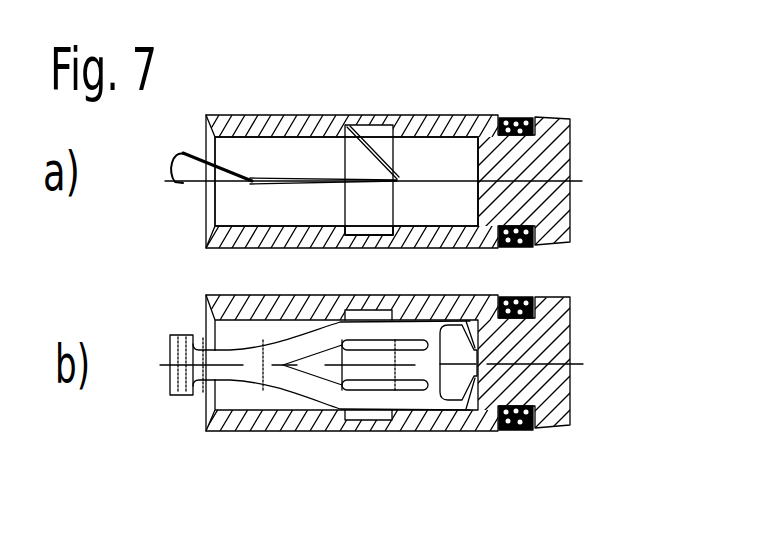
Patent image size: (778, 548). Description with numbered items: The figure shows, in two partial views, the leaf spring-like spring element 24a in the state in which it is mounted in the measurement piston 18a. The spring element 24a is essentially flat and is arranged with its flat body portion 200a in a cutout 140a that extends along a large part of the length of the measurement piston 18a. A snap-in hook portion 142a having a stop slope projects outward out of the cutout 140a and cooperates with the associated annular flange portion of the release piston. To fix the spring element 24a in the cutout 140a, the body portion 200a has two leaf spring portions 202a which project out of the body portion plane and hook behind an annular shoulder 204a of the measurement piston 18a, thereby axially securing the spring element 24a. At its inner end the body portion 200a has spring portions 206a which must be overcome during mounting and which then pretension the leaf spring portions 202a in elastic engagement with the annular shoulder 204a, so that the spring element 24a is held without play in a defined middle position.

The measurement piston 18a is at (438, 122).
The spring element 24a is at (252, 181).
The cutout 140a is at (277, 152).
The snap-in hook portion 142a is at (176, 158).
The body portion 200a is at (438, 178).
The leaf spring portions 202a is at (358, 127).
The annular shoulder 204a is at (343, 235).
The spring portions 206a is at (472, 336).